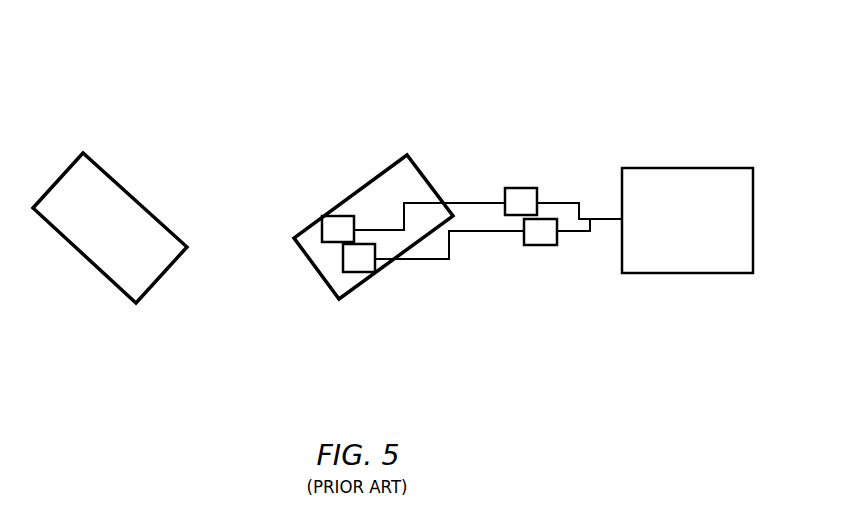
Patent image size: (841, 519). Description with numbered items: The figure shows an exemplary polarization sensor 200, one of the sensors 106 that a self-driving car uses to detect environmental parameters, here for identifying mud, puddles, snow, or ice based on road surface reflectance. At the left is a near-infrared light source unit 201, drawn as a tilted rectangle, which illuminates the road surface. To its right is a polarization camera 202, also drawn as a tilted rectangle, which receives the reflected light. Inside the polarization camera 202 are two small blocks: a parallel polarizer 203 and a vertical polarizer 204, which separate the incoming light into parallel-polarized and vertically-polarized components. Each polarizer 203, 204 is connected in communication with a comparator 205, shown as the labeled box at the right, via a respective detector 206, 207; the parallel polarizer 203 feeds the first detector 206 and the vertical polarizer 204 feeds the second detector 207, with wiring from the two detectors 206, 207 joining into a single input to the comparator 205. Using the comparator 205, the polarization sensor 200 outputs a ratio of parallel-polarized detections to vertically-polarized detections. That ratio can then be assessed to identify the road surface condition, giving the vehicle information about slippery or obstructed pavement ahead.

The sensors 106 is at (490, 79).
The polarization sensor 200 is at (354, 106).
The near-infrared light source unit 201 is at (135, 198).
The polarization camera 202 is at (352, 193).
The parallel polarizer 203 is at (321, 217).
The vertical polarizer 204 is at (357, 272).
The comparator 205 is at (692, 165).
The detector 206 is at (520, 188).
The detector 207 is at (540, 247).